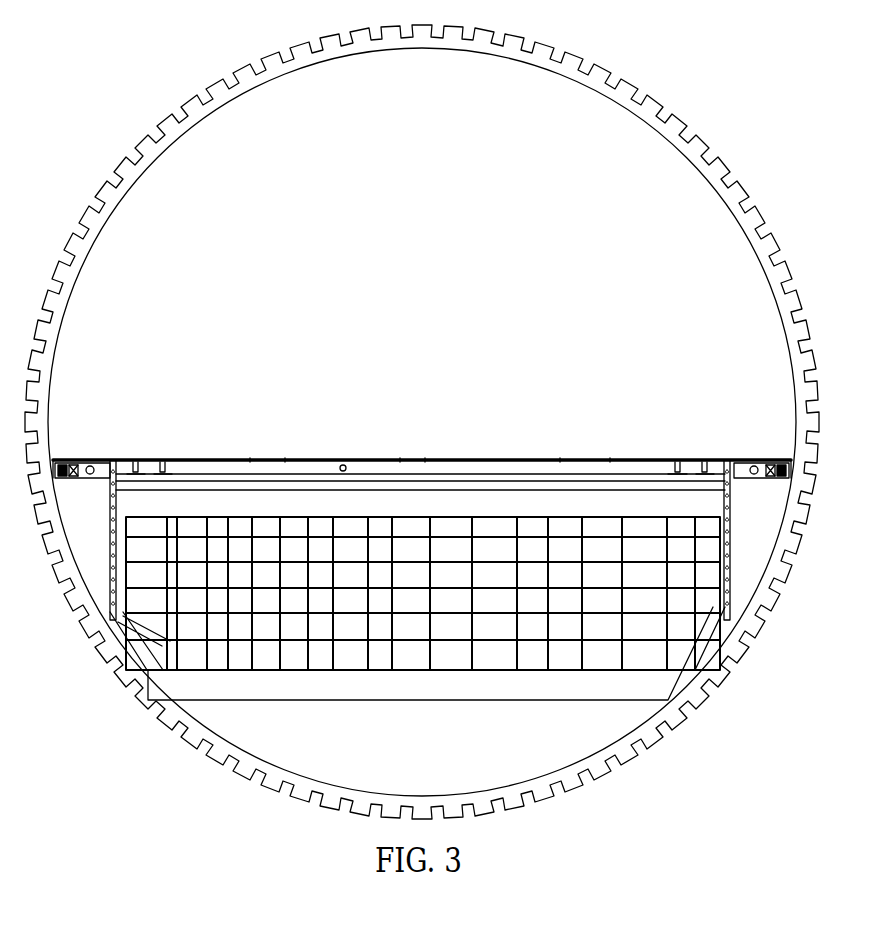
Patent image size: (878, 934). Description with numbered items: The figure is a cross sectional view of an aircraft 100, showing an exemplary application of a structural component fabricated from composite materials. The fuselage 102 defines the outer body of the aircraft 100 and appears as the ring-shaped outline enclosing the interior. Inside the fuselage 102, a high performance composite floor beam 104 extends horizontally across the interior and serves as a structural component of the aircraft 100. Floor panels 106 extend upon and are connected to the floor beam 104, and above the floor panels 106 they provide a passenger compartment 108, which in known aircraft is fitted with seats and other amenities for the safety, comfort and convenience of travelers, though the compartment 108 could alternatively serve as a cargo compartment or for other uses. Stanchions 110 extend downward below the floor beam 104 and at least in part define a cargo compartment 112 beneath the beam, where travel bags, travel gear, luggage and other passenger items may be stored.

The aircraft 100 is at (748, 86).
The fuselage 102 is at (722, 161).
The composite floor beam 104 is at (570, 448).
The floor panels 106 is at (372, 459).
The passenger compartment 108 is at (443, 283).
The stanchions 110 is at (730, 533).
The cargo compartment 112 is at (441, 578).